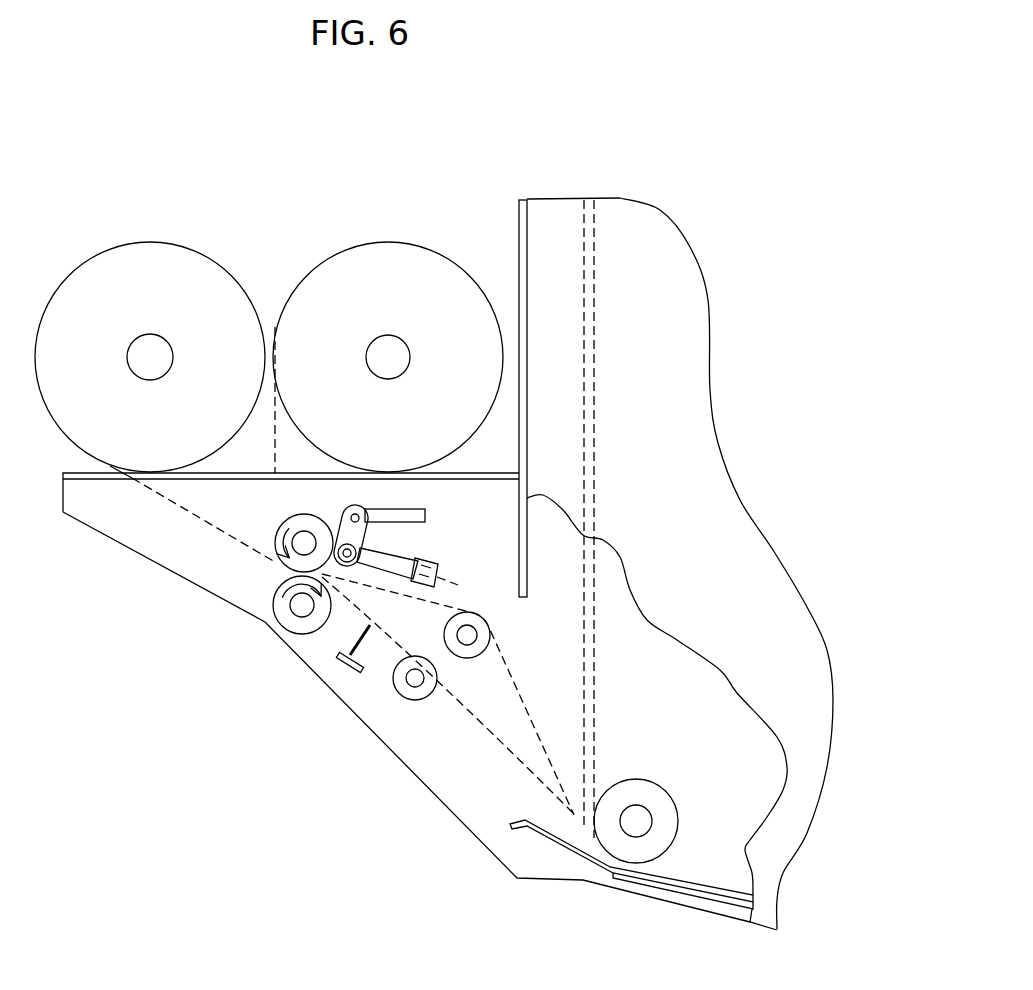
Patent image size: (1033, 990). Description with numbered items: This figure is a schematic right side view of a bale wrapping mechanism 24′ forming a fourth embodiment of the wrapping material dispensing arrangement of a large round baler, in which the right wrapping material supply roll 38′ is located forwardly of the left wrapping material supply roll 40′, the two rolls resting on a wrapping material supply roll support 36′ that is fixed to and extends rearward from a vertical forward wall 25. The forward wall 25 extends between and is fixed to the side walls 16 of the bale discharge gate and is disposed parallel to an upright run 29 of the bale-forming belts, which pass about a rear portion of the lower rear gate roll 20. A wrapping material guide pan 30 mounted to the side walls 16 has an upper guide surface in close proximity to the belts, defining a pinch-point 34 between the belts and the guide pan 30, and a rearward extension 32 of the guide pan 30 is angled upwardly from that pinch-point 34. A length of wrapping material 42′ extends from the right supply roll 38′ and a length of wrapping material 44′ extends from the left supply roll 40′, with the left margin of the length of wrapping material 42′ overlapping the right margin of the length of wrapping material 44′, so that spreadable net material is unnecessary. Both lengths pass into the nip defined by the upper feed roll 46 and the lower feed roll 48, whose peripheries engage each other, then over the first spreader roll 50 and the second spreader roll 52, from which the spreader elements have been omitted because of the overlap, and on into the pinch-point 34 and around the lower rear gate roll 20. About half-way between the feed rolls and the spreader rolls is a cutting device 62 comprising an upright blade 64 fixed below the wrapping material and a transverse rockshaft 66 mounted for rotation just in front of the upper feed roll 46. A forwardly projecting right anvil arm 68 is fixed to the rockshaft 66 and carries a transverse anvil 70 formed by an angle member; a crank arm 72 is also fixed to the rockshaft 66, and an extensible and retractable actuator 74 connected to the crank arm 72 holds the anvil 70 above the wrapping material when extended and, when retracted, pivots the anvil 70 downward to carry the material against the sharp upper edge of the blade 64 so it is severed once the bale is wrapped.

The side walls 16 is at (673, 479).
The lower rear gate roll 20 is at (660, 792).
The bale wrapping mechanism 24′ is at (160, 585).
The vertical forward wall 25 is at (519, 212).
The upright run 29 is at (600, 310).
The wrapping material guide pan 30 is at (700, 902).
The rearward extension 32 is at (540, 837).
The pinch-point 34 is at (560, 800).
The wrapping material supply roll support 36′ is at (423, 485).
The right wrapping material supply roll 38′ is at (395, 250).
The left wrapping material supply roll 40′ is at (157, 250).
The length of wrapping material 42′ is at (277, 453).
The length of wrapping material 44′ is at (210, 527).
The upper feed roll 46 is at (308, 517).
The lower feed roll 48 is at (288, 630).
The first spreader roll 50 is at (405, 698).
The second spreader roll 52 is at (471, 658).
The cutting device 62 is at (447, 560).
The upright blade 64 is at (340, 641).
The transverse rockshaft 66 is at (362, 548).
The right anvil arm 68 is at (425, 552).
The transverse anvil 70 is at (458, 585).
The crank arm 72 is at (362, 508).
The extensible and retractable actuator 74 is at (408, 507).